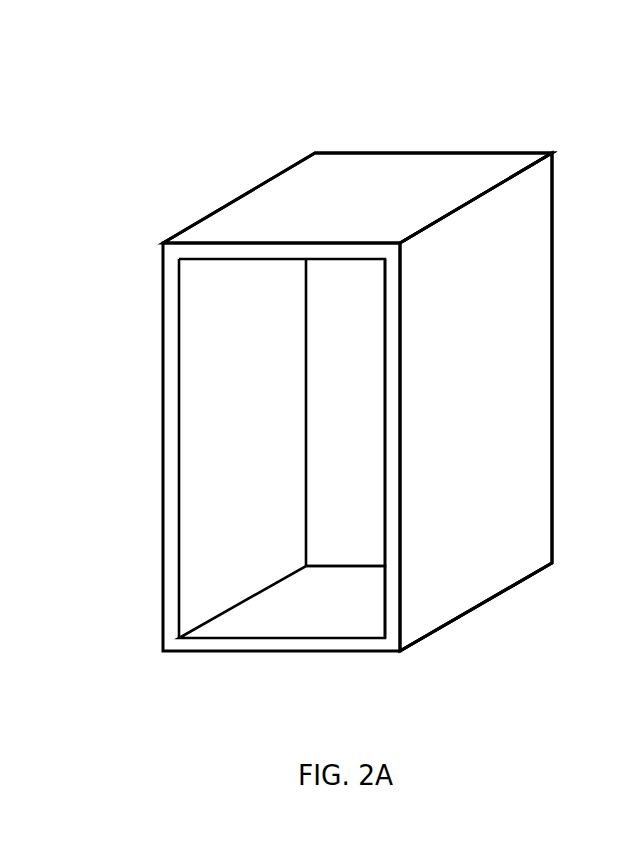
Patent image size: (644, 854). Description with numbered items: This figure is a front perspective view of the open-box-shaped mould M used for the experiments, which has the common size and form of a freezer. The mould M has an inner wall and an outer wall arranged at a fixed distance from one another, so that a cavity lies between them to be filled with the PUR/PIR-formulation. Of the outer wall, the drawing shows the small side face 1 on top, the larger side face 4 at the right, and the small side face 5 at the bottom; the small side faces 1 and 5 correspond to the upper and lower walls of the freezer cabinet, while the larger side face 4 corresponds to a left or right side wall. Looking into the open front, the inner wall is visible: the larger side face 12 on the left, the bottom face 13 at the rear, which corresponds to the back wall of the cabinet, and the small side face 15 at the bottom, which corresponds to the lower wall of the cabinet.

The mould M is at (275, 124).
The side face 1 is at (388, 178).
The side face 4 is at (505, 417).
The side face 5 is at (460, 640).
The side face 12 is at (208, 403).
The bottom face 13 is at (350, 439).
The side face 15 is at (313, 613).